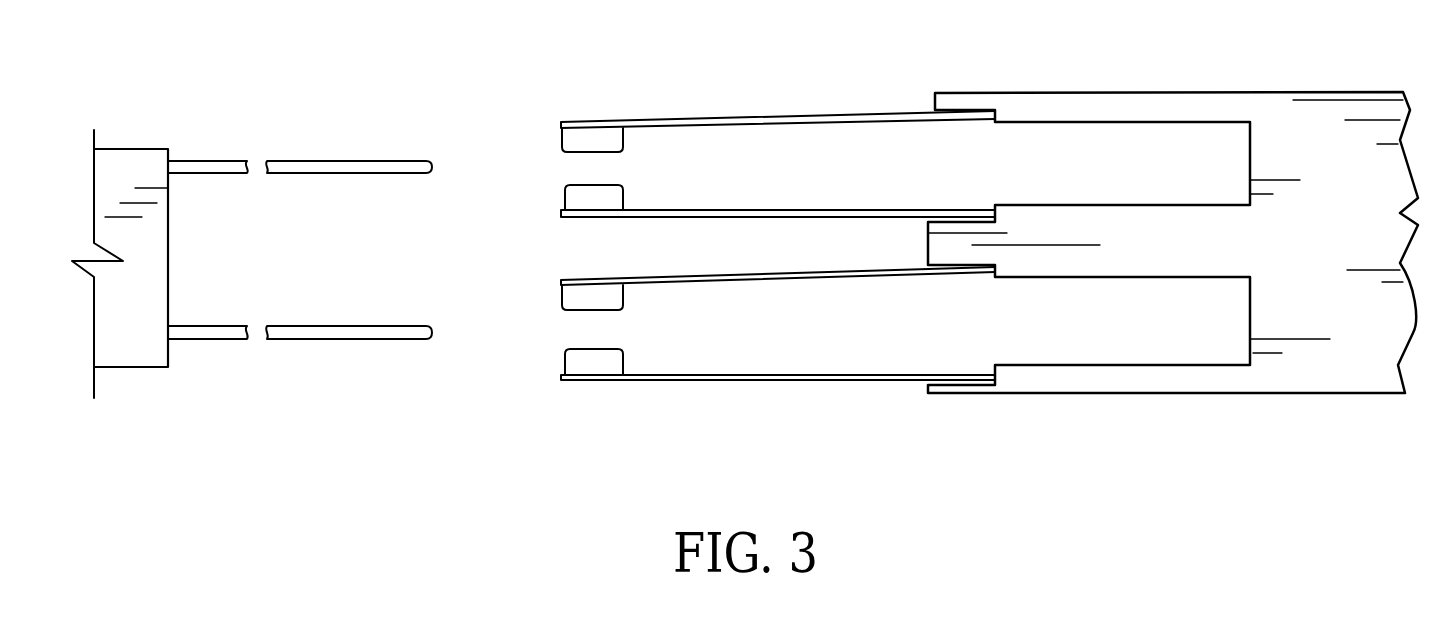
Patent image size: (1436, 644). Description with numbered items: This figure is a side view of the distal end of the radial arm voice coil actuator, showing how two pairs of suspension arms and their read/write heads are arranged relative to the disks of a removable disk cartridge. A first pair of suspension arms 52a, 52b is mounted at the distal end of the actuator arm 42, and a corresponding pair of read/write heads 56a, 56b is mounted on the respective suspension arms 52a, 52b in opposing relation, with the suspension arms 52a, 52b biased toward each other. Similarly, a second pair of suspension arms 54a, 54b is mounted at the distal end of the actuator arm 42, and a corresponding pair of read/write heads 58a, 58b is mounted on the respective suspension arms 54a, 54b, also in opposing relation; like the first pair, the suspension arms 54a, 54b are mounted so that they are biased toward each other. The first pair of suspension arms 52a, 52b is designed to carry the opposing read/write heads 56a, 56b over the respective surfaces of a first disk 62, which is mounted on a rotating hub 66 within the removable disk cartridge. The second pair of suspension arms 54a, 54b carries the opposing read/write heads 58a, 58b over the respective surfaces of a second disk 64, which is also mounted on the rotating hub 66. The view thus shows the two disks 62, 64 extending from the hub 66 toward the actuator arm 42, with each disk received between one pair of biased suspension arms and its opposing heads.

The actuator arm 42 is at (1303, 90).
The suspension arm 52a is at (782, 115).
The suspension arm 52b is at (782, 210).
The suspension arm 54a is at (793, 280).
The suspension arm 54b is at (782, 382).
The read/write head 56a is at (567, 148).
The read/write head 56b is at (567, 186).
The read/write head 58a is at (565, 308).
The read/write head 58b is at (565, 352).
The first disk 62 is at (320, 160).
The second disk 64 is at (333, 340).
The rotating hub 66 is at (120, 149).